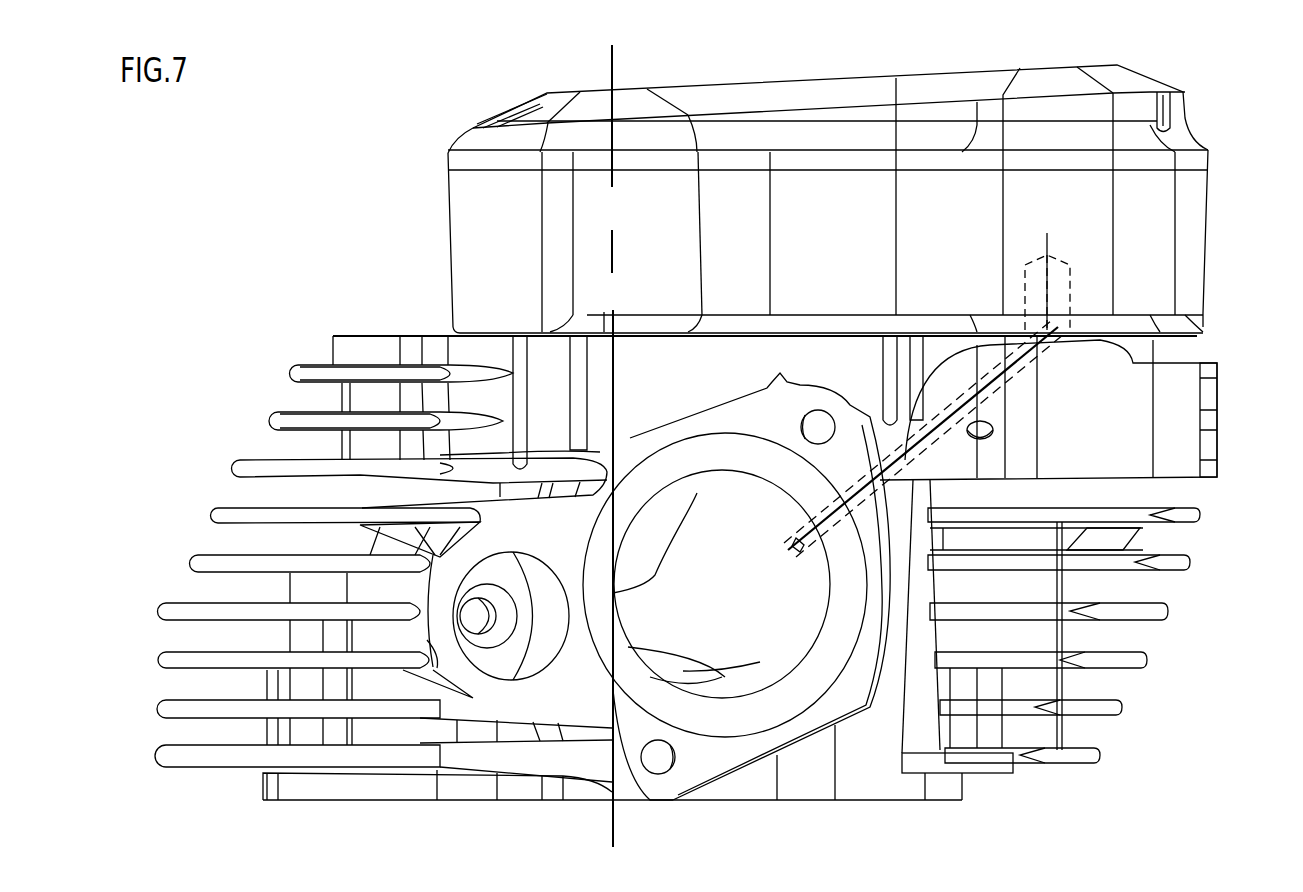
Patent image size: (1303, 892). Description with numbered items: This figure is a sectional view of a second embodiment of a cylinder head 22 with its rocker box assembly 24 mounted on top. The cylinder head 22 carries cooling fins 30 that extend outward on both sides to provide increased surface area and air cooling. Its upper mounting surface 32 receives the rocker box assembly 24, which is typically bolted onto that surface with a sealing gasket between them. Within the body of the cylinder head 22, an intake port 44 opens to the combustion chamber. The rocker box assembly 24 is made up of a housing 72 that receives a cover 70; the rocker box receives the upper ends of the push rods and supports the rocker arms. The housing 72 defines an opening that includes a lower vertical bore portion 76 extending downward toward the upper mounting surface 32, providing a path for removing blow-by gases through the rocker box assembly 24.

The cylinder head 22 is at (691, 525).
The rocker box assembly 24 is at (861, 295).
The cooling fins 30 is at (192, 564).
The upper mounting surface 32 is at (1097, 332).
The intake port 44 is at (762, 632).
The cover 70 is at (1036, 69).
The housing 72 is at (1207, 213).
The lower vertical bore portion 76 is at (1070, 278).